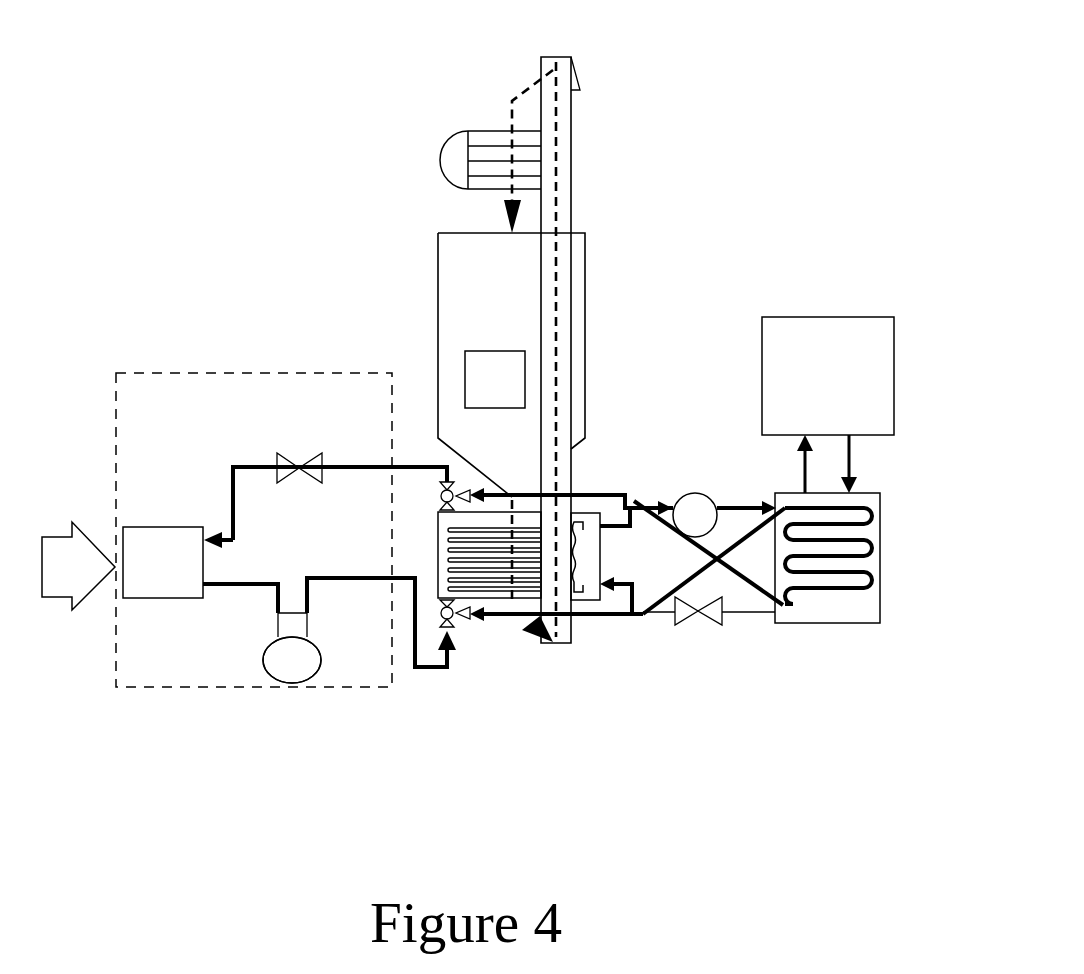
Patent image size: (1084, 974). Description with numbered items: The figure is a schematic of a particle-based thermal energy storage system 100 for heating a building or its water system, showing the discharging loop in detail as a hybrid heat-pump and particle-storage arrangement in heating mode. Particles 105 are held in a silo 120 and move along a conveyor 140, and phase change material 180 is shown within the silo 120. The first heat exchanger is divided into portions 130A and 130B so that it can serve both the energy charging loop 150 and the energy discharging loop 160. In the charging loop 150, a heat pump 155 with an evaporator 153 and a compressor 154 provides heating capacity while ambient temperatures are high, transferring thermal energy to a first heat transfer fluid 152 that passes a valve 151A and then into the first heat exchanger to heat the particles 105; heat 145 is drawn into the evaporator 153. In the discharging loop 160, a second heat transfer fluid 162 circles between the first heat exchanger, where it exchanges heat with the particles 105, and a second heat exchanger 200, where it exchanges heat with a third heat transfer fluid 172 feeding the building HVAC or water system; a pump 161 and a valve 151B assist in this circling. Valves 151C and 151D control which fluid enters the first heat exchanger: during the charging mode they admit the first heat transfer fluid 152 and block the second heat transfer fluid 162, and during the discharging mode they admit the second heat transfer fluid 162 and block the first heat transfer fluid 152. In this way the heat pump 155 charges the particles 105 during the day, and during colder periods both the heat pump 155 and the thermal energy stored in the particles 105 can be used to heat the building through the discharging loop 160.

The particle-based thermal energy storage (TES) system 100 is at (266, 162).
The particles/particle stream 105 is at (557, 115).
The silo 120 is at (522, 339).
The first heat exchanger portion 130A is at (492, 593).
The first heat exchanger portion 130B is at (527, 537).
The conveyor 140 is at (571, 157).
The heat 145 is at (78, 566).
The energy charging loop 150 is at (348, 544).
The valve 151A is at (273, 452).
The valve 151B is at (693, 615).
The valve 151C is at (453, 497).
The valve 151D is at (448, 630).
The first heat transfer fluid 152 is at (368, 465).
The evaporator 153 is at (188, 579).
The compressor 154 is at (263, 654).
The heat pump 155 is at (312, 688).
The energy discharging loop 160 is at (672, 569).
The pump 161 is at (702, 492).
The second heat transfer fluid 162 is at (763, 593).
The third heat transfer fluid 172 is at (850, 448).
The phase change material 180 is at (465, 380).
The second heat exchanger 200 is at (872, 542).